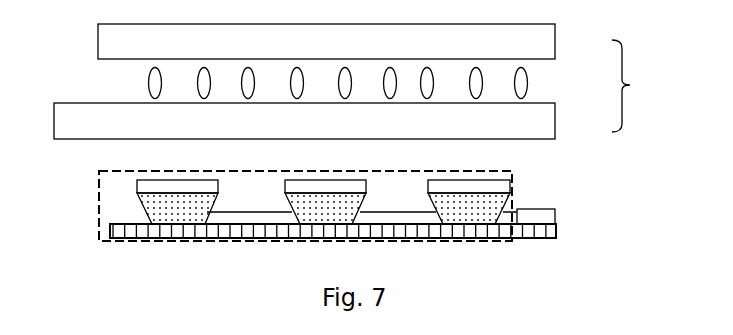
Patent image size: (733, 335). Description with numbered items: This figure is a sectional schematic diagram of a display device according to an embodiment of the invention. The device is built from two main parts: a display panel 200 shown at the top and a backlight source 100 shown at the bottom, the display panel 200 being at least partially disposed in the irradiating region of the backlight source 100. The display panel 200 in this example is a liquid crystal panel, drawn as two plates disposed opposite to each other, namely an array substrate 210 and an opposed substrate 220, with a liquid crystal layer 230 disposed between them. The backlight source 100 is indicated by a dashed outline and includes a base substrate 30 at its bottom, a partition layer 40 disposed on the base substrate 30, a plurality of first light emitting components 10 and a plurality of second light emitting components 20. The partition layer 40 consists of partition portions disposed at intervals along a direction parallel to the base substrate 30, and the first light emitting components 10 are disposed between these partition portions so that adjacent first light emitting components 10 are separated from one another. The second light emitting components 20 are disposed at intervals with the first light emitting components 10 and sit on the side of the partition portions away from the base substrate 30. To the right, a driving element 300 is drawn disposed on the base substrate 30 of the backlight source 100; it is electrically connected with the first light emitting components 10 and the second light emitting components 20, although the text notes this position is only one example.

The first light emitting component 10 is at (252, 216).
The second light emitting component 20 is at (158, 188).
The base substrate 30 is at (123, 230).
The partition layer 40 is at (149, 213).
The backlight source 100 is at (514, 201).
The display panel 200 is at (643, 86).
The array substrate 210 is at (543, 126).
The opposed substrate 220 is at (543, 41).
The liquid crystal layer 230 is at (528, 83).
The driving element 300 is at (533, 216).